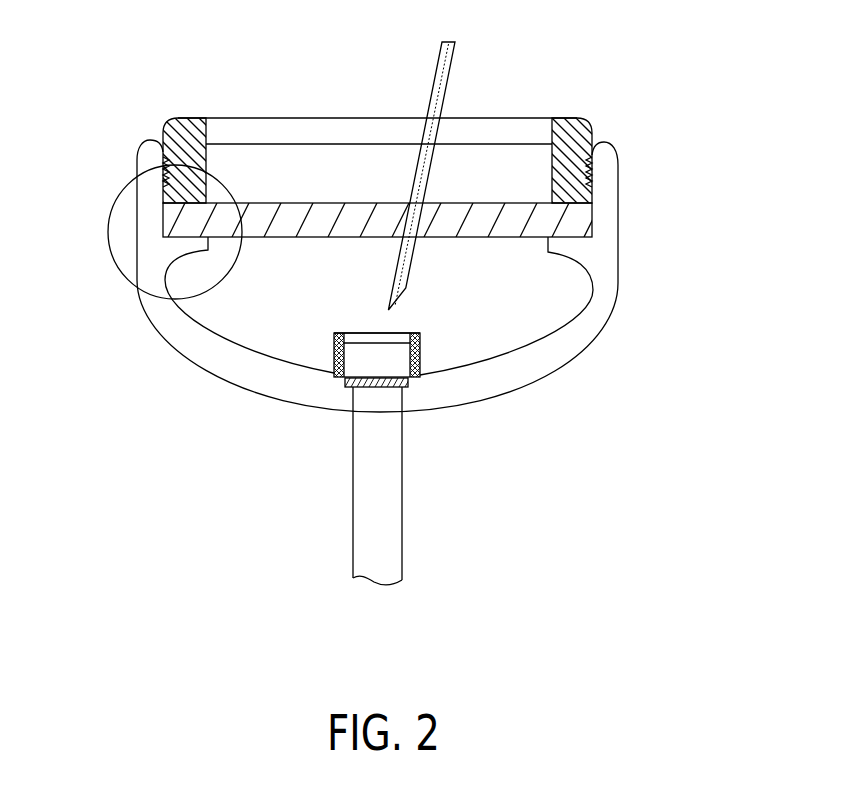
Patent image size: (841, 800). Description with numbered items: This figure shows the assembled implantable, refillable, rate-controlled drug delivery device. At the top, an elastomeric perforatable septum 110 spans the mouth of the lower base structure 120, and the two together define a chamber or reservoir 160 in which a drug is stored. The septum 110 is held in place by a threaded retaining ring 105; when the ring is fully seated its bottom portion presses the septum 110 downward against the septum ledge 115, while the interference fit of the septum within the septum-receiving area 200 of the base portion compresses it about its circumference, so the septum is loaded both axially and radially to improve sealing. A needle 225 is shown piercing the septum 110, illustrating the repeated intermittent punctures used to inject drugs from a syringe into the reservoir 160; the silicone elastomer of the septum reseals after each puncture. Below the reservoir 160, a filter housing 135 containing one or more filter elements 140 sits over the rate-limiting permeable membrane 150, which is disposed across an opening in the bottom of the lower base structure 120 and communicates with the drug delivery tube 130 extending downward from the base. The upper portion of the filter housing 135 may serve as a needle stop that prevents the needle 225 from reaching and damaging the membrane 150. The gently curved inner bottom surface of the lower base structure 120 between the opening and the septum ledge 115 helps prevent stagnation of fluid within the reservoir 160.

The retaining ring 105 is at (612, 123).
The perforatable septum 110 is at (573, 215).
The septum ledge 115 is at (185, 252).
The lower base structure 120 is at (643, 272).
The drug delivery tube 130 is at (383, 508).
The filter housing 135 is at (356, 333).
The filter element 140 is at (333, 357).
The rate-limiting permeable membrane 150 is at (348, 386).
The reservoir 160 is at (512, 318).
The septum-receiving area 200 is at (108, 231).
The needle 225 is at (452, 77).